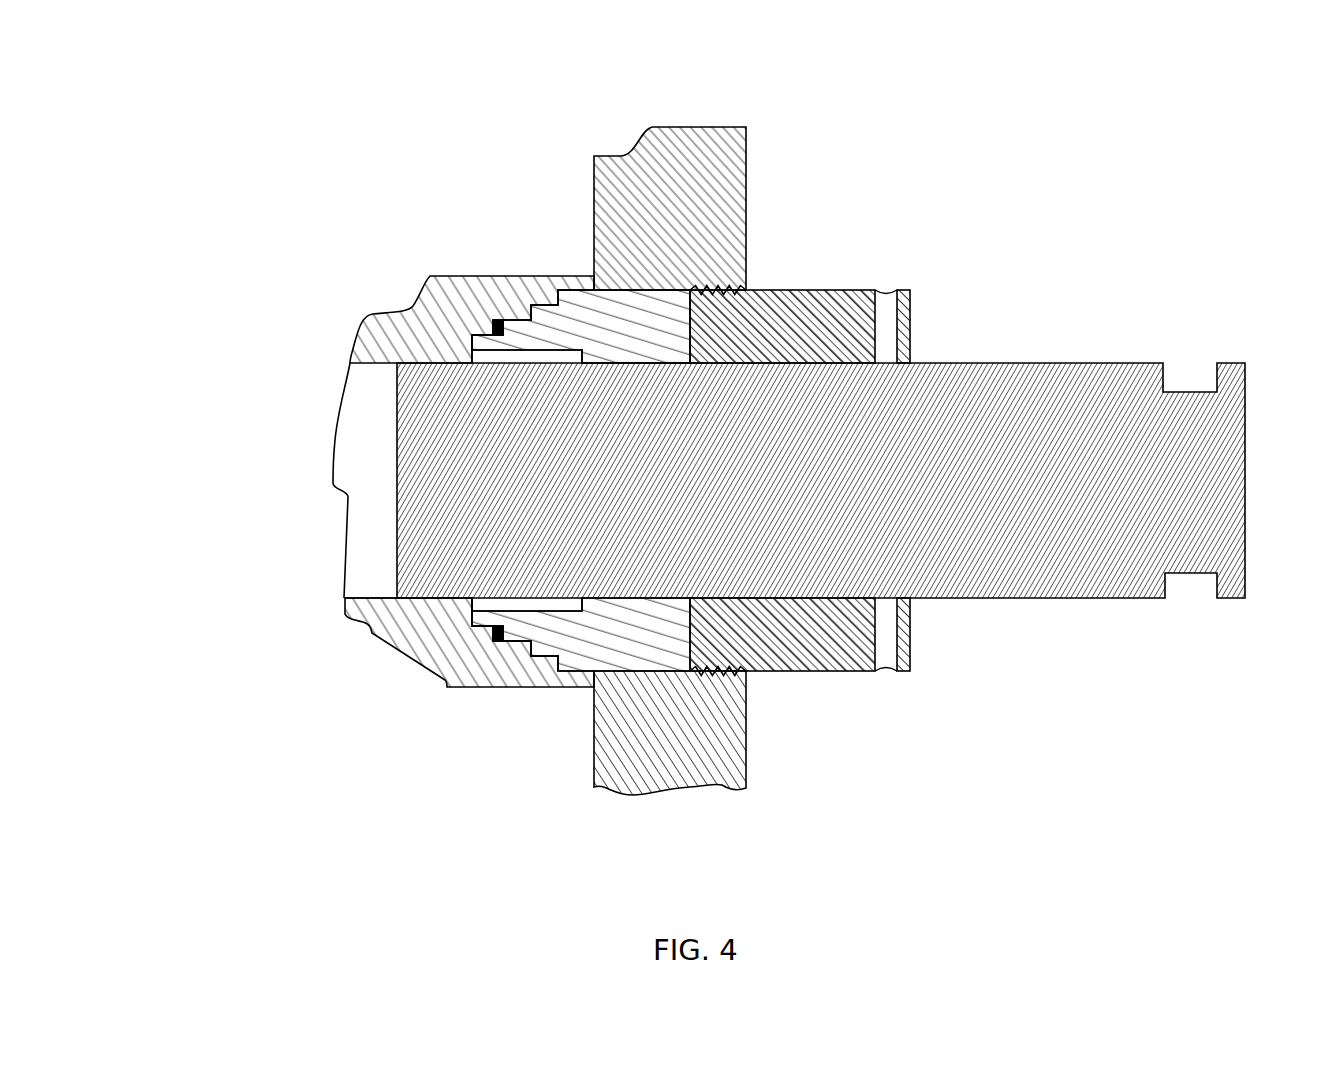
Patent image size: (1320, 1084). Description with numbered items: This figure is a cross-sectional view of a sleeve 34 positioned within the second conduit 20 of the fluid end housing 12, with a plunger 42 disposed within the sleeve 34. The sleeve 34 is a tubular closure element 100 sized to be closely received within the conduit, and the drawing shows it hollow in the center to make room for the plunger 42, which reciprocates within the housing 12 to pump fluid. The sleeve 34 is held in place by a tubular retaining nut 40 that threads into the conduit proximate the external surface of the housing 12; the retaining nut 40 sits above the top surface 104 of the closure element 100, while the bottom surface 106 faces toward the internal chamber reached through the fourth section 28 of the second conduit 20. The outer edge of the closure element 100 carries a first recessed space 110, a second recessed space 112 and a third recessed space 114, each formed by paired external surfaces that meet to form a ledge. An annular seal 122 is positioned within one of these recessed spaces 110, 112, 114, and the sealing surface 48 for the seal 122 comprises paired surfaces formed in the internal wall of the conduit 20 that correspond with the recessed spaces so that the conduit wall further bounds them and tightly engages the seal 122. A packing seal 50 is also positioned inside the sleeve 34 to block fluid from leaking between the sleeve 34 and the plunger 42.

The housing 12 is at (746, 762).
The second conduit 20 is at (367, 430).
The fourth section 28 is at (332, 552).
The sleeve 34 is at (592, 308).
The retaining nut 40 is at (910, 632).
The plunger 42 is at (1012, 362).
The sealing surface 48 is at (497, 322).
The packing seal 50 is at (557, 604).
The closure element 100 is at (645, 318).
The top surface 104 is at (692, 618).
The bottom surface 106 is at (470, 338).
The first recessed space 110 is at (493, 640).
The second recessed space 112 is at (527, 650).
The third recessed space 114 is at (552, 666).
The annular seal 122 is at (494, 327).